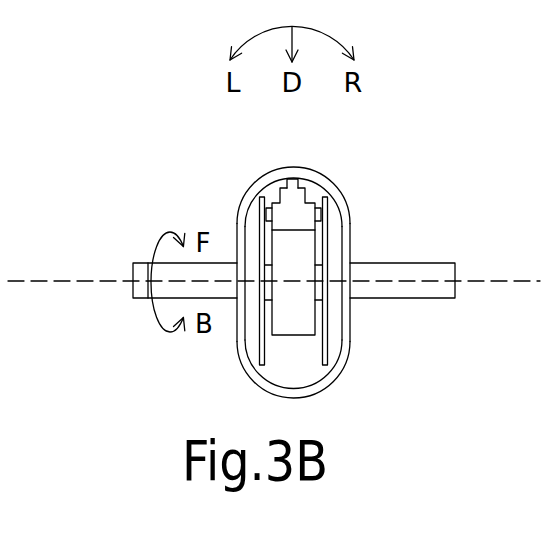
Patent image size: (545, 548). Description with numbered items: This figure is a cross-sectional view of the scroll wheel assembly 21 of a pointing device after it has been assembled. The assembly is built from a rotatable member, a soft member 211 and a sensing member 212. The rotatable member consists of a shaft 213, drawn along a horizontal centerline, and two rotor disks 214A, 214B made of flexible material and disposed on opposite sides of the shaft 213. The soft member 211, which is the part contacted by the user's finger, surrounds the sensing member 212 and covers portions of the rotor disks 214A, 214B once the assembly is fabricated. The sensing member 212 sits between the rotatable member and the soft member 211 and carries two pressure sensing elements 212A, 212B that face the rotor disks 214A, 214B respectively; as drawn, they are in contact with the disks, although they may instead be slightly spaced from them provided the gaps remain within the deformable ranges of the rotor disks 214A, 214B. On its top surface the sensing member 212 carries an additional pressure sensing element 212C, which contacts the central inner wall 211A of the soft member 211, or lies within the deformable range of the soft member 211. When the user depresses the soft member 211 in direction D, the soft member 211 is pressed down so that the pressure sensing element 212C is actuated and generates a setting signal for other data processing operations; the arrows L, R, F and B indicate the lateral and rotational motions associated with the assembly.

The scroll wheel assembly 21 is at (133, 115).
The soft member 211 is at (249, 199).
The central inner wall 211A is at (292, 178).
The sensing member 212 is at (293, 178).
The pressure sensing element 212A is at (262, 198).
The pressure sensing element 212B is at (327, 200).
The additional pressure sensing element 212C is at (298, 200).
The shaft 213 is at (412, 273).
The rotor disk 214A is at (244, 334).
The rotor disk 214B is at (343, 334).